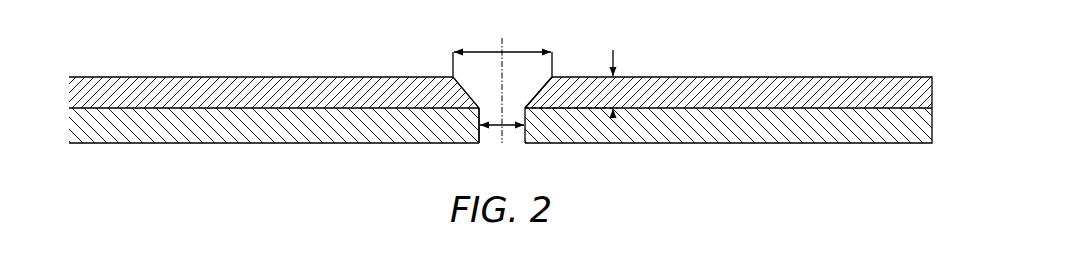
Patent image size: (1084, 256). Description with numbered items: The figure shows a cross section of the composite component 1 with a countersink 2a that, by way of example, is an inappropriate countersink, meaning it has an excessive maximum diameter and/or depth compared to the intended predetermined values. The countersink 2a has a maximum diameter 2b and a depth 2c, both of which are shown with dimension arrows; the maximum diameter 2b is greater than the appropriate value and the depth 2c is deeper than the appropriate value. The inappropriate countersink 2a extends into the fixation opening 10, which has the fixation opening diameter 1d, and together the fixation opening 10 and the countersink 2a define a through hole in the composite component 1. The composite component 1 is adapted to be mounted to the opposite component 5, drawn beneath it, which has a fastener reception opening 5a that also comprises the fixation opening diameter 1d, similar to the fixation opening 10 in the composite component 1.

The composite component 1 is at (892, 60).
The opposite component 5 is at (132, 149).
The fixation opening 10 is at (476, 102).
The fastener reception opening 5a is at (476, 132).
The fixation opening diameter 1d is at (507, 127).
The maximum diameter 2b is at (485, 52).
The countersink 2a is at (535, 83).
The depth 2c is at (616, 88).